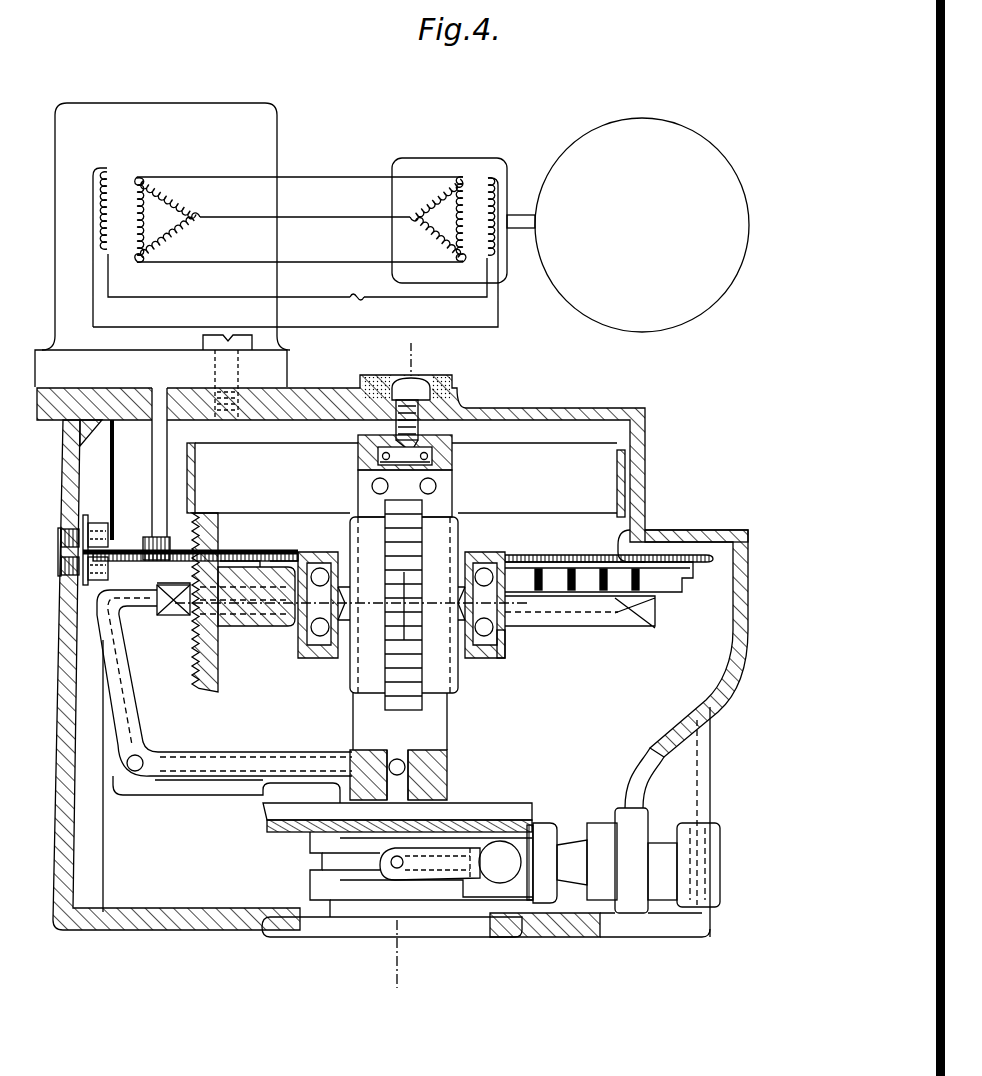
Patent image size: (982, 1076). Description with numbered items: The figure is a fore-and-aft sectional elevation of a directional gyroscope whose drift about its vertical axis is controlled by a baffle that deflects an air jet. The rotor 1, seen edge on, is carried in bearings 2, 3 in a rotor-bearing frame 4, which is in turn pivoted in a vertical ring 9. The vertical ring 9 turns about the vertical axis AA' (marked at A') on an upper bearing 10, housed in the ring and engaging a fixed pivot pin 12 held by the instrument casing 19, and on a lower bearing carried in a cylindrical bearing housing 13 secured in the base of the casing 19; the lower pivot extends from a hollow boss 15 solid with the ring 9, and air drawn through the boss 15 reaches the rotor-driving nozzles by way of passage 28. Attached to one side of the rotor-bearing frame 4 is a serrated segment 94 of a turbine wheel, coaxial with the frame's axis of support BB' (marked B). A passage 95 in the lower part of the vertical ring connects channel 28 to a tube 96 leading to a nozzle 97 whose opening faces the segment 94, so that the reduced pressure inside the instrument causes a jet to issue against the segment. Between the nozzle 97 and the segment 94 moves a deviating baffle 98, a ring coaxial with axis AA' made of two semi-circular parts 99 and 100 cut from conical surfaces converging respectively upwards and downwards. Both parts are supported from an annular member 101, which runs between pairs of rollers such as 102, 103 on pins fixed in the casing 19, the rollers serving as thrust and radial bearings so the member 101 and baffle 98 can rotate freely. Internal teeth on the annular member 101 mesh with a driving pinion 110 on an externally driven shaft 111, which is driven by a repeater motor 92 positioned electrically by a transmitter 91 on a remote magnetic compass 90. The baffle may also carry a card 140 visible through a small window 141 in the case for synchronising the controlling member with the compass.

The rotor 1 is at (443, 522).
The bearing 2 is at (317, 660).
The bearing 3 is at (500, 641).
The rotor-bearing frame 4 is at (504, 558).
The vertical ring 9 is at (362, 490).
The upper bearing 10 is at (362, 455).
The fixed pivot pin 12 is at (431, 402).
The cylindrical bearing housing 13 is at (357, 905).
The boss 15 is at (430, 797).
The instrument casing 19 is at (628, 418).
The passage 28 is at (443, 777).
The magnetic compass 90 is at (679, 134).
The transmitter 91 is at (433, 165).
The receiver 92 is at (169, 124).
The segment of a turbine wheel 94 is at (223, 546).
The passage 95 is at (398, 757).
The tube 96 is at (293, 762).
The nozzle 97 is at (152, 597).
The baffle 98 is at (177, 613).
The semi-circular part 99 is at (178, 602).
The semi-circular part 100 is at (189, 590).
The annular member 101 is at (92, 546).
The roller 102 is at (100, 528).
The roller 103 is at (73, 580).
The driving pinion 110 is at (145, 540).
The shaft 111 is at (158, 445).
The card 140 is at (692, 560).
The window 141 is at (707, 533).
The axis BB' B is at (405, 603).
The vertical axis AA' A' is at (395, 966).